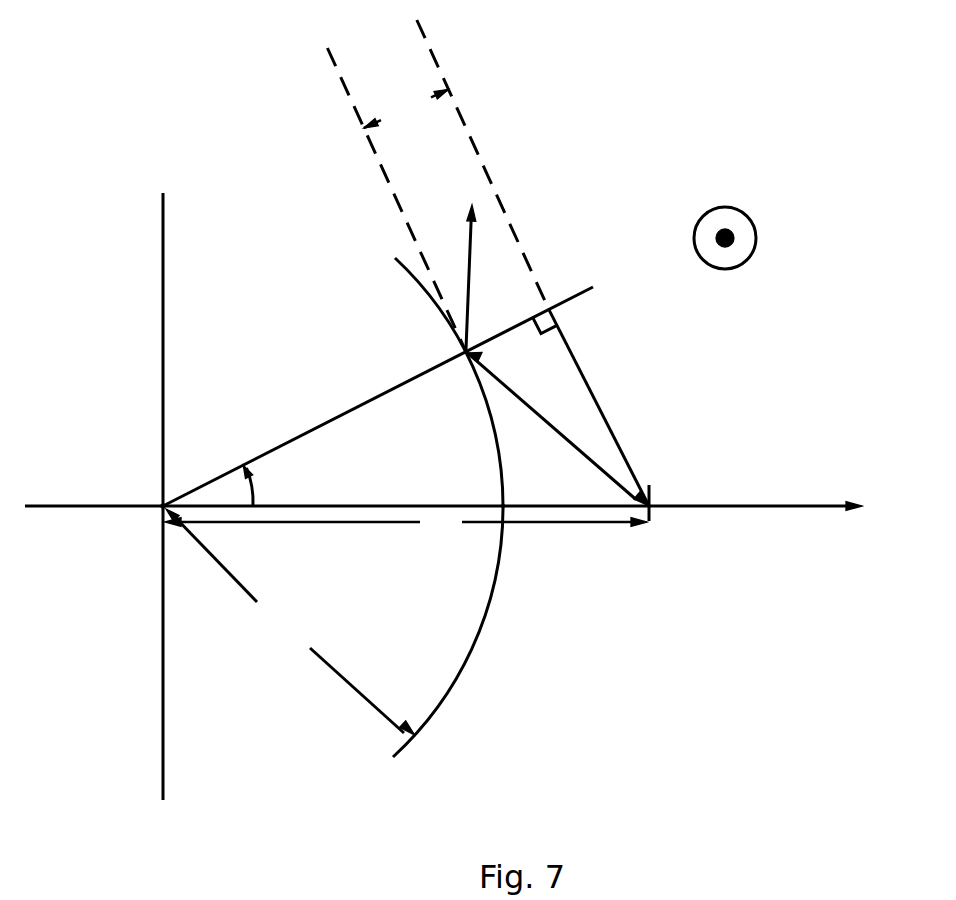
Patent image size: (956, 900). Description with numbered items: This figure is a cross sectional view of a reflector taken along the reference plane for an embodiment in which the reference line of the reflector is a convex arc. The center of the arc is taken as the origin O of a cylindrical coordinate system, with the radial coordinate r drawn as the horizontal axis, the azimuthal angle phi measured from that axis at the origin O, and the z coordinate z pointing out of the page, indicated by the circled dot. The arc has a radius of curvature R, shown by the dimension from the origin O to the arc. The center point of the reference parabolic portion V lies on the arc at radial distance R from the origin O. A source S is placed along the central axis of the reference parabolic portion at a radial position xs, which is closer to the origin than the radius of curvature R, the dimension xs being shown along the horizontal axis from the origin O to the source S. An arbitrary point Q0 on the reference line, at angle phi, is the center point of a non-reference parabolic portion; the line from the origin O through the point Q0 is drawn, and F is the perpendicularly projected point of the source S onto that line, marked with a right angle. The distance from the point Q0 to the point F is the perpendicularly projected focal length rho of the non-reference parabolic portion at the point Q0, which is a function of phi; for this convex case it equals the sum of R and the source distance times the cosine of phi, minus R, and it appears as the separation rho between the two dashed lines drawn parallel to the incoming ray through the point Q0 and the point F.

The origin O is at (140, 485).
The radial coordinate r is at (443, 531).
The z coordinate z is at (749, 238).
The radius of curvature R is at (334, 507).
The center point of the reference parabolic portion V is at (516, 486).
The source S is at (667, 520).
The perpendicularly projected point F is at (591, 381).
The center point of a non-reference parabolic portion Q0 is at (526, 355).
The angular coordinate phi is at (378, 396).
The perpendicularly projected focal length rho is at (437, 186).
The source radial position xs is at (406, 529).